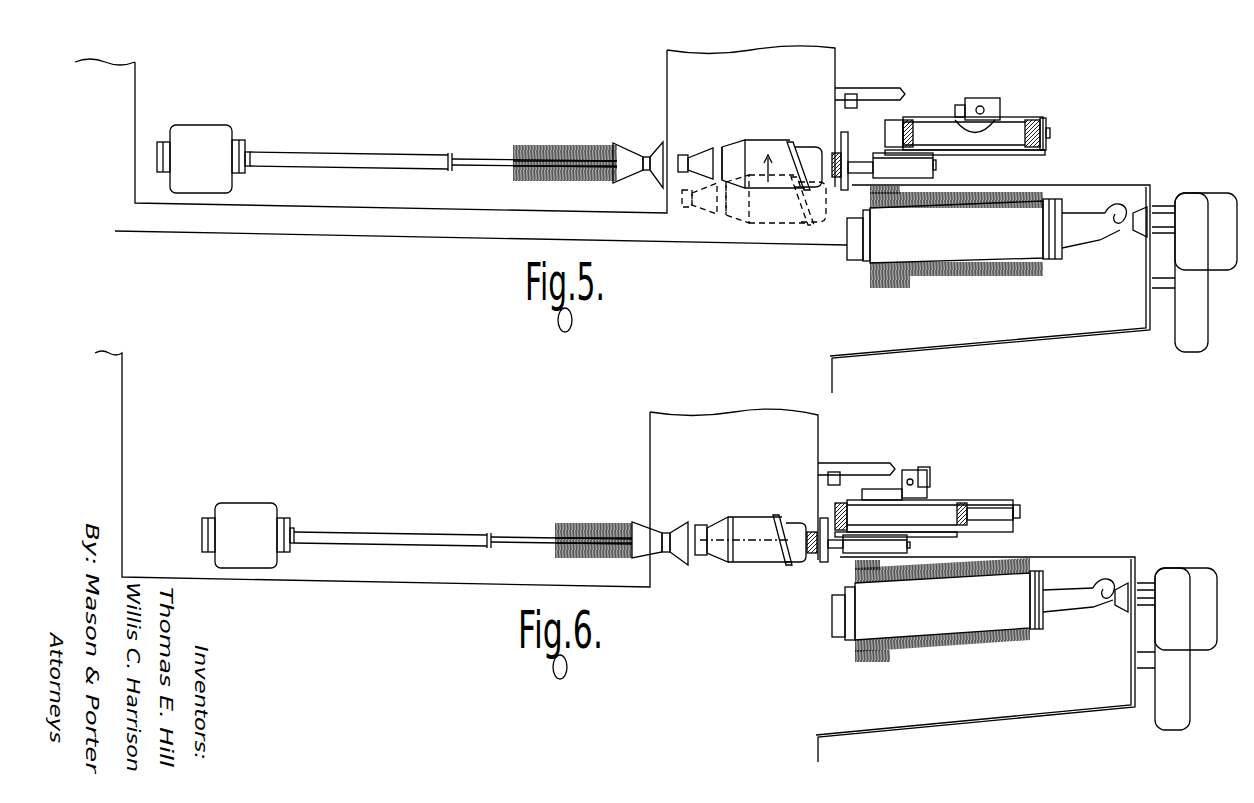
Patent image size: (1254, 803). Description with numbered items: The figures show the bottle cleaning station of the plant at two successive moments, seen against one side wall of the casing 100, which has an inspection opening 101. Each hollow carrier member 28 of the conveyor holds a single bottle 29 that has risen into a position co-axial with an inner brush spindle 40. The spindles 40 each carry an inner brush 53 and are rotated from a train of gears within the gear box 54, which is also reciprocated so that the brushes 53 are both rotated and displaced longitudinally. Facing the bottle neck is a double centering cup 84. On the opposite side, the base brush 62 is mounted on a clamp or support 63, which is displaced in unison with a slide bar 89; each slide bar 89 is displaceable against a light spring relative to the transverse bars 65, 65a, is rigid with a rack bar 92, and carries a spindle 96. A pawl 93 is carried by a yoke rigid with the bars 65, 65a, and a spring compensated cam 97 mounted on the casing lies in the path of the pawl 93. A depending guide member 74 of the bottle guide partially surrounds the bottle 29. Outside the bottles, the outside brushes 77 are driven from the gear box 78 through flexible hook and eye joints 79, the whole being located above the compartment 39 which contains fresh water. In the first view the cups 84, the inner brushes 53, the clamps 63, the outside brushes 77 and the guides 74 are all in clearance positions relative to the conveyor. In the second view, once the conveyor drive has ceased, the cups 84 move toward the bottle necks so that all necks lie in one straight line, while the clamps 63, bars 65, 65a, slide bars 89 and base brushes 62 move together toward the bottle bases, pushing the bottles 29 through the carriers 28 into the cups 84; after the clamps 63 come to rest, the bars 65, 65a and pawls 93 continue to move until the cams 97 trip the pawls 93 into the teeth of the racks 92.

In FIG. 5, the side wall of the casing 100 is at (118, 92).
In FIG. 6, the side wall of the casing 100 is at (103, 483).
In FIG. 5, the gear box 54 is at (208, 137).
In FIG. 6, the gear box 54 is at (242, 513).
In FIG. 5, the inner brush spindle 40 is at (375, 135).
In FIG. 6, the inner brush spindle 40 is at (395, 537).
In FIG. 5, the inspection opening 101 is at (522, 140).
In FIG. 6, the inspection opening 101 is at (546, 509).
In FIG. 5, the inner brush 53 is at (565, 123).
In FIG. 6, the inner brush 53 is at (578, 527).
In FIG. 5, the double centering cup 84 is at (624, 124).
In FIG. 6, the double centering cup 84 is at (663, 507).
In FIG. 5, the carrier member 28 is at (772, 148).
In FIG. 6, the carrier member 28 is at (757, 527).
In FIG. 5, the bottle 29 is at (798, 145).
In FIG. 6, the bottle 29 is at (810, 513).
In FIG. 5, the base brush 62 is at (832, 183).
In FIG. 6, the base brush 62 is at (813, 565).
In FIG. 5, the base brush clamp 63 is at (853, 163).
In FIG. 6, the base brush clamp 63 is at (827, 565).
In FIG. 5, the depending guide member 74 is at (850, 130).
In FIG. 6, the depending guide member 74 is at (823, 520).
In FIG. 5, the spring compensated cam 97 is at (905, 95).
In FIG. 6, the spring compensated cam 97 is at (882, 473).
In FIG. 6, the pawl 93 is at (931, 474).
In FIG. 5, the transverse bar 65a is at (930, 117).
In FIG. 6, the transverse bar 65a is at (848, 565).
In FIG. 5, the rack bar 92 is at (1007, 122).
In FIG. 6, the rack bar 92 is at (928, 492).
In FIG. 5, the transverse bar 65 is at (1043, 130).
In FIG. 6, the transverse bar 65 is at (967, 505).
In FIG. 6, the spindle 96 is at (997, 510).
In FIG. 5, the slide bar 89 is at (1040, 155).
In FIG. 6, the slide bar 89 is at (1003, 533).
In FIG. 5, the outside brush 77 is at (993, 238).
In FIG. 6, the outside brush 77 is at (982, 613).
In FIG. 5, the flexible hook and eye joint 79 is at (1128, 237).
In FIG. 6, the flexible hook and eye joint 79 is at (1113, 605).
In FIG. 5, the gear box 78 is at (1192, 312).
In FIG. 6, the gear box 78 is at (1173, 702).
In FIG. 5, the compartment 39 is at (913, 355).
In FIG. 6, the compartment 39 is at (855, 733).